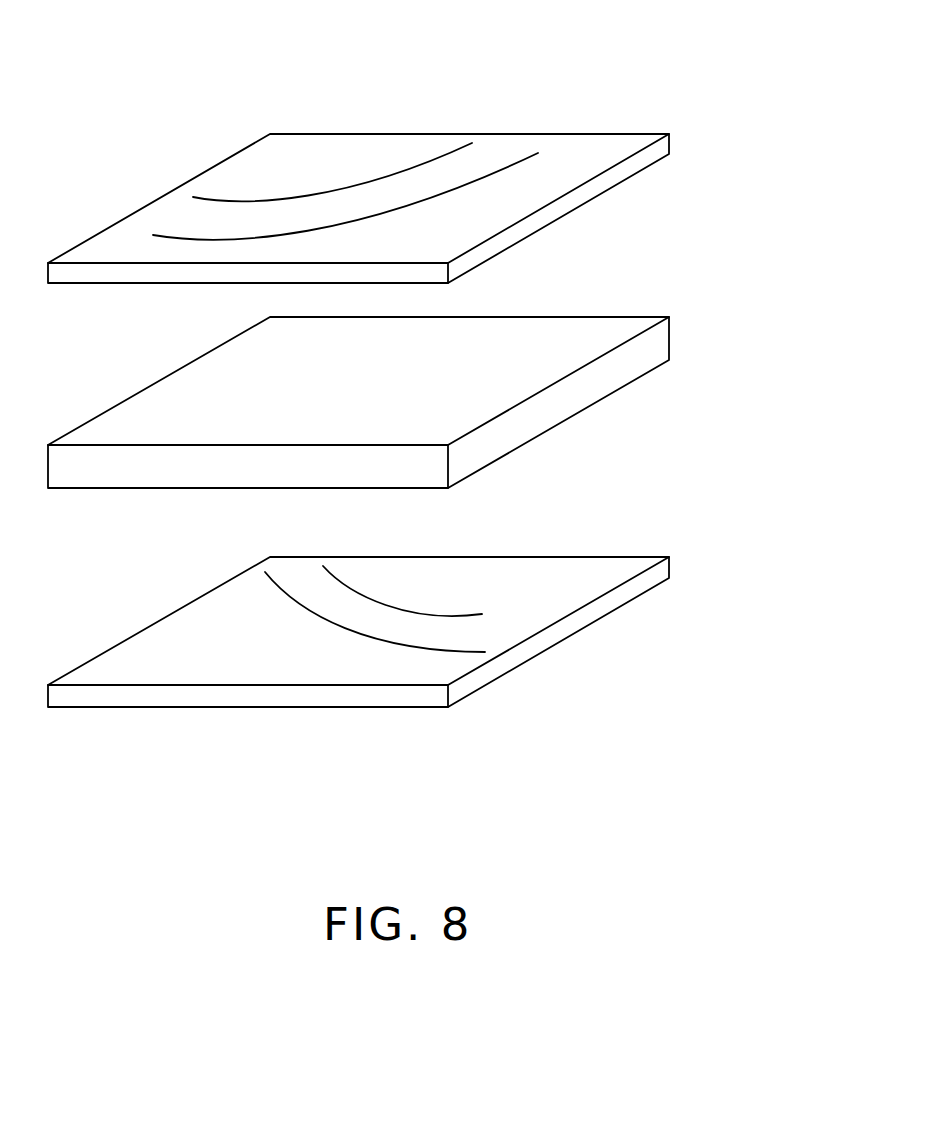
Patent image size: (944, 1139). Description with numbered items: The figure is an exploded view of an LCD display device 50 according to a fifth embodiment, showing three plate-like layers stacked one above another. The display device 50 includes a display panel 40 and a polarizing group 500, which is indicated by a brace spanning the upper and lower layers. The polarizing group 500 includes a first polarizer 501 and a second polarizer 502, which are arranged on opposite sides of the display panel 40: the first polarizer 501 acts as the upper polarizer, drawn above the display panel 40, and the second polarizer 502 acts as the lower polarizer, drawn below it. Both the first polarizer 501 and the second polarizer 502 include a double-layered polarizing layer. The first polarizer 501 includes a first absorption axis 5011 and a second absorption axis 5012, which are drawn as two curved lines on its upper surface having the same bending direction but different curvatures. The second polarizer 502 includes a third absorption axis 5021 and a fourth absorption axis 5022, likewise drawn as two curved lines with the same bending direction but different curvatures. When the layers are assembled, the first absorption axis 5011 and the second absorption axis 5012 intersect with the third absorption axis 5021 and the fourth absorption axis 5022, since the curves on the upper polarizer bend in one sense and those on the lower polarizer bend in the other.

The display device 50 is at (243, 45).
The polarizing group 500 is at (785, 198).
The first polarizer 501 is at (653, 153).
The first absorption axis 5011 is at (400, 172).
The second absorption axis 5012 is at (498, 172).
The display panel 40 is at (573, 335).
The second polarizer 502 is at (622, 572).
The third absorption axis 5021 is at (433, 617).
The fourth absorption axis 5022 is at (462, 652).